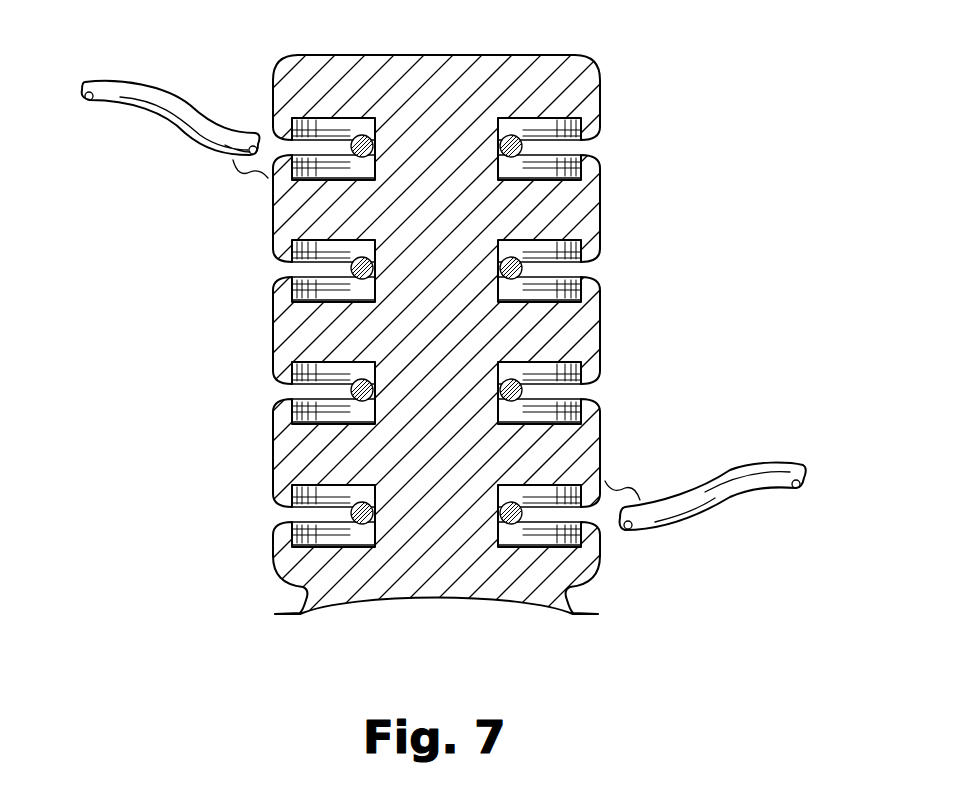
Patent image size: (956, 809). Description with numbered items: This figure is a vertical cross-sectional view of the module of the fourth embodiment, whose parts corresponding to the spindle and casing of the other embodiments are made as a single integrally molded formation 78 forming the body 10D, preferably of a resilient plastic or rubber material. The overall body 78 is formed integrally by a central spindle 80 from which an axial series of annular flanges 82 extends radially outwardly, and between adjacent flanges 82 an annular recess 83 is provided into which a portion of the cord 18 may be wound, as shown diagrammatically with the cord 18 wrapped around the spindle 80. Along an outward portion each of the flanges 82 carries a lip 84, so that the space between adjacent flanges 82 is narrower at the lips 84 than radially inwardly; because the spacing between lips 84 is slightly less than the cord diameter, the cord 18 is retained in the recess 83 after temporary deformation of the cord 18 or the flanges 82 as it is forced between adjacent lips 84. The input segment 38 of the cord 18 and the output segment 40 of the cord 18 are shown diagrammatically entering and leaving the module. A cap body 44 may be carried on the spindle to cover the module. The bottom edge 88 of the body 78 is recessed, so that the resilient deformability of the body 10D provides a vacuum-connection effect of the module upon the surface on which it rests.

The cord 18 is at (350, 430).
The input segment of the cord 38 is at (185, 112).
The output segment of the cord 40 is at (727, 470).
The cap body 44 is at (432, 56).
The integrally molded formation (overall body) 78 is at (478, 328).
The body (module of the fourth embodiment) 10D is at (640, 97).
The central spindle 80 is at (478, 322).
The annular flanges 82 is at (322, 318).
The annular recess 83 is at (338, 140).
The lip 84 is at (585, 290).
The bottom edge 88 is at (433, 600).